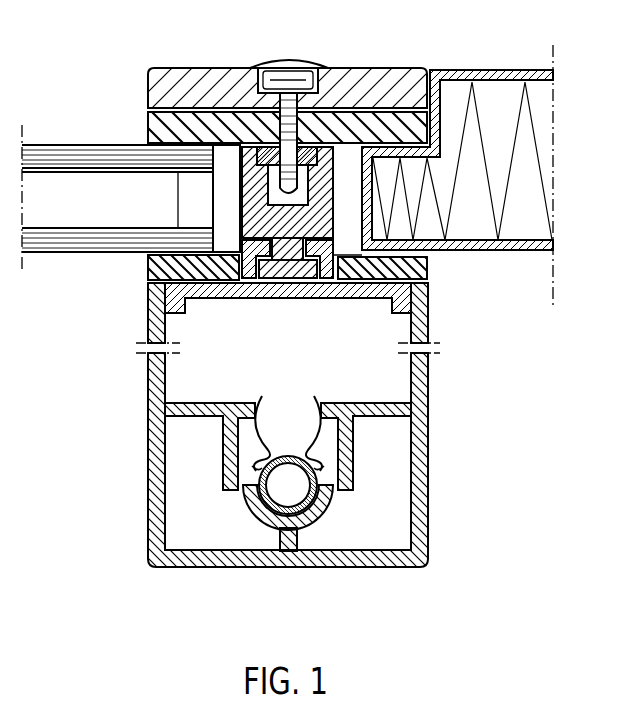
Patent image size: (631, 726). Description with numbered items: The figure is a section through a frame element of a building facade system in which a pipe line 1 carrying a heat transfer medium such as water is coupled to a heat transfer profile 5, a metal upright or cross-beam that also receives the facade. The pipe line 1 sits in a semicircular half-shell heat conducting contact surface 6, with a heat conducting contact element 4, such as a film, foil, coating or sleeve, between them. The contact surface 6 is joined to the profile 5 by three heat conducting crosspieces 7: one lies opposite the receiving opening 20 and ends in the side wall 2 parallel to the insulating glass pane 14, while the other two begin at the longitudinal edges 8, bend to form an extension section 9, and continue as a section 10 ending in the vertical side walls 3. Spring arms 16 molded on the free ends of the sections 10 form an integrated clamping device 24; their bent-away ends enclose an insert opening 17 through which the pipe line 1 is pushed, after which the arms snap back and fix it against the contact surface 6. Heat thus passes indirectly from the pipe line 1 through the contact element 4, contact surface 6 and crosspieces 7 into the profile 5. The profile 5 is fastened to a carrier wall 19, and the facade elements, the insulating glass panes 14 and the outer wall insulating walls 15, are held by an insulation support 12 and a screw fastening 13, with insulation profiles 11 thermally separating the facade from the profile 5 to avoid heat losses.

The pipe line 1 is at (304, 446).
The side wall 2 is at (363, 568).
The vertical side walls 3 is at (150, 518).
The heat conducting contact element 4 is at (281, 442).
The heat transfer profile 5 is at (305, 457).
The heat conducting contact surface 6 is at (262, 498).
The heat conducting crosspieces 7 is at (300, 545).
The longitudinal edges 8 is at (247, 467).
The extension section 9 is at (224, 428).
The crosspiece section 10 is at (185, 403).
The insulation profiles 11 is at (425, 268).
The insulation support 12 is at (165, 124).
The screw fastening 13 is at (300, 61).
The insulating glass panes 14 is at (54, 243).
The outer wall-insulating walls 15 is at (531, 173).
The spring arms 16 is at (320, 428).
The insert opening 17 is at (290, 437).
The carrier wall 19 is at (350, 299).
The receiving opening 20 is at (244, 466).
The clamping device 24 is at (262, 417).